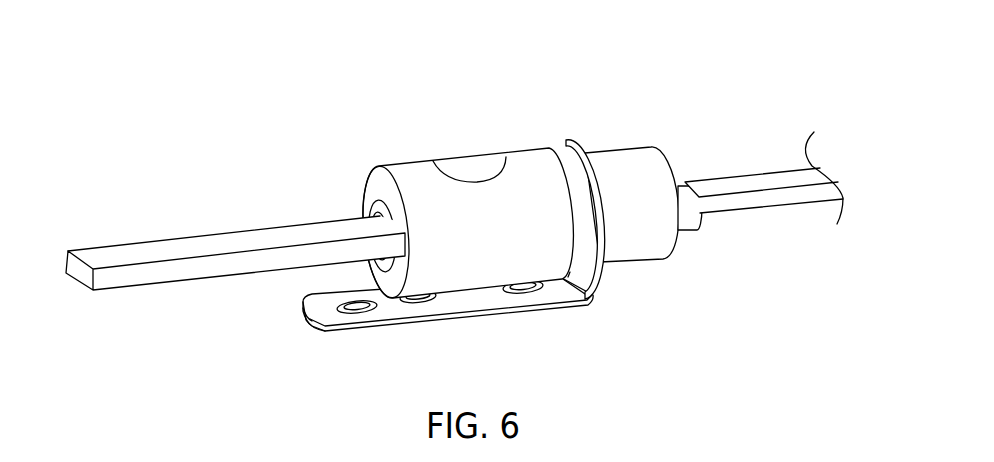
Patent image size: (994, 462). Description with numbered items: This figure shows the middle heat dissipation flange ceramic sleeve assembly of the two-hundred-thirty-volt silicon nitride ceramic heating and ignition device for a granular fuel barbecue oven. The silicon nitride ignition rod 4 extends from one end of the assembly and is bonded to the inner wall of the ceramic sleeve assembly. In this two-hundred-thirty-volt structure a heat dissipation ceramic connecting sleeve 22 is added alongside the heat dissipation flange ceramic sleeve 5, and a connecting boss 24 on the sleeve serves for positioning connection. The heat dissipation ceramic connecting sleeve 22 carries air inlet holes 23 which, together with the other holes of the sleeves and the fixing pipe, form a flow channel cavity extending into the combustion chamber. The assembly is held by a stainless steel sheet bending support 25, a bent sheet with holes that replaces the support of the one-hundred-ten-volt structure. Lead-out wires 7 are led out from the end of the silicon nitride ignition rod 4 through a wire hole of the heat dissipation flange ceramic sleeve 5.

The silicon nitride ignition rod 4 is at (178, 248).
The heat dissipation flange ceramic sleeve 5 is at (632, 178).
The lead-out wires 7 is at (737, 182).
The heat dissipation ceramic connecting sleeve 22 is at (413, 183).
The air inlet holes 23 is at (470, 176).
The connecting boss 24 is at (365, 199).
The stainless steel sheet bending support 25 is at (390, 312).